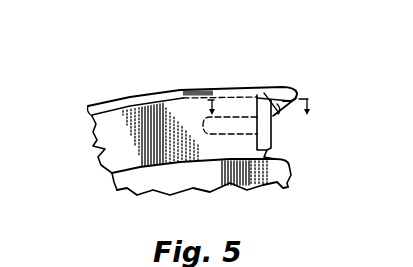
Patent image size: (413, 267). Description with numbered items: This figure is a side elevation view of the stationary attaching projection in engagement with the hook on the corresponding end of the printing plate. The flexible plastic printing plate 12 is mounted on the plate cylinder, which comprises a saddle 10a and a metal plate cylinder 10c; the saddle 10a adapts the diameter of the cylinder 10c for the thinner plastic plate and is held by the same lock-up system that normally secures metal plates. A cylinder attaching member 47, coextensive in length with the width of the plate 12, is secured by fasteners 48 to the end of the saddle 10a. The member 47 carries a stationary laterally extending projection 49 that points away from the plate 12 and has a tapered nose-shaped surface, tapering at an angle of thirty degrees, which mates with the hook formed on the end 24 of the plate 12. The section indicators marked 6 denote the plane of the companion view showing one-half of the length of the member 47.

The flexible plastic printing plate 12 is at (133, 96).
The saddle 10a is at (107, 139).
The metal plate cylinder 10c is at (279, 187).
The cylinder attaching member 47 is at (253, 184).
The stationary laterally extending projection 49 is at (279, 99).
The end of plate 24 is at (300, 88).
The fasteners 48 is at (264, 93).
The section line indicators 6 is at (249, 110).